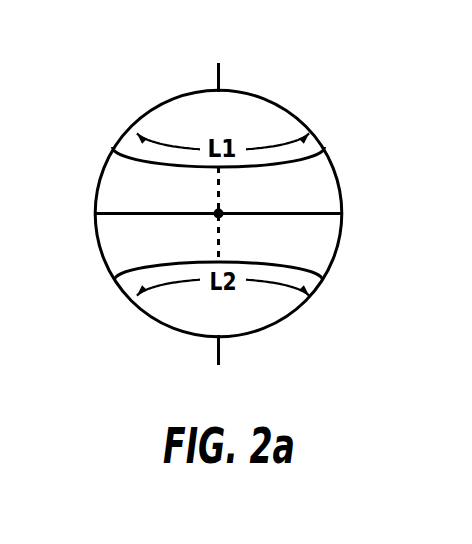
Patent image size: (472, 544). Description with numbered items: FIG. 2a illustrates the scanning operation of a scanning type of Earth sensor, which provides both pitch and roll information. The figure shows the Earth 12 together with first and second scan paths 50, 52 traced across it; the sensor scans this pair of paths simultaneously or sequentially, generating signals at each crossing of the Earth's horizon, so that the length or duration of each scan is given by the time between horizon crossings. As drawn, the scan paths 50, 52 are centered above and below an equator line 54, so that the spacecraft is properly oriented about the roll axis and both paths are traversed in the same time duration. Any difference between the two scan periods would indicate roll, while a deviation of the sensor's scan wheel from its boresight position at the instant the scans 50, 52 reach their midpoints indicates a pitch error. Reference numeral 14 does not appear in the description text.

The Earth 12 is at (261, 98).
The axial stems 14 is at (217, 72).
The first scan path 50 is at (300, 155).
The second scan path 52 is at (300, 268).
The equator line 54 is at (122, 212).